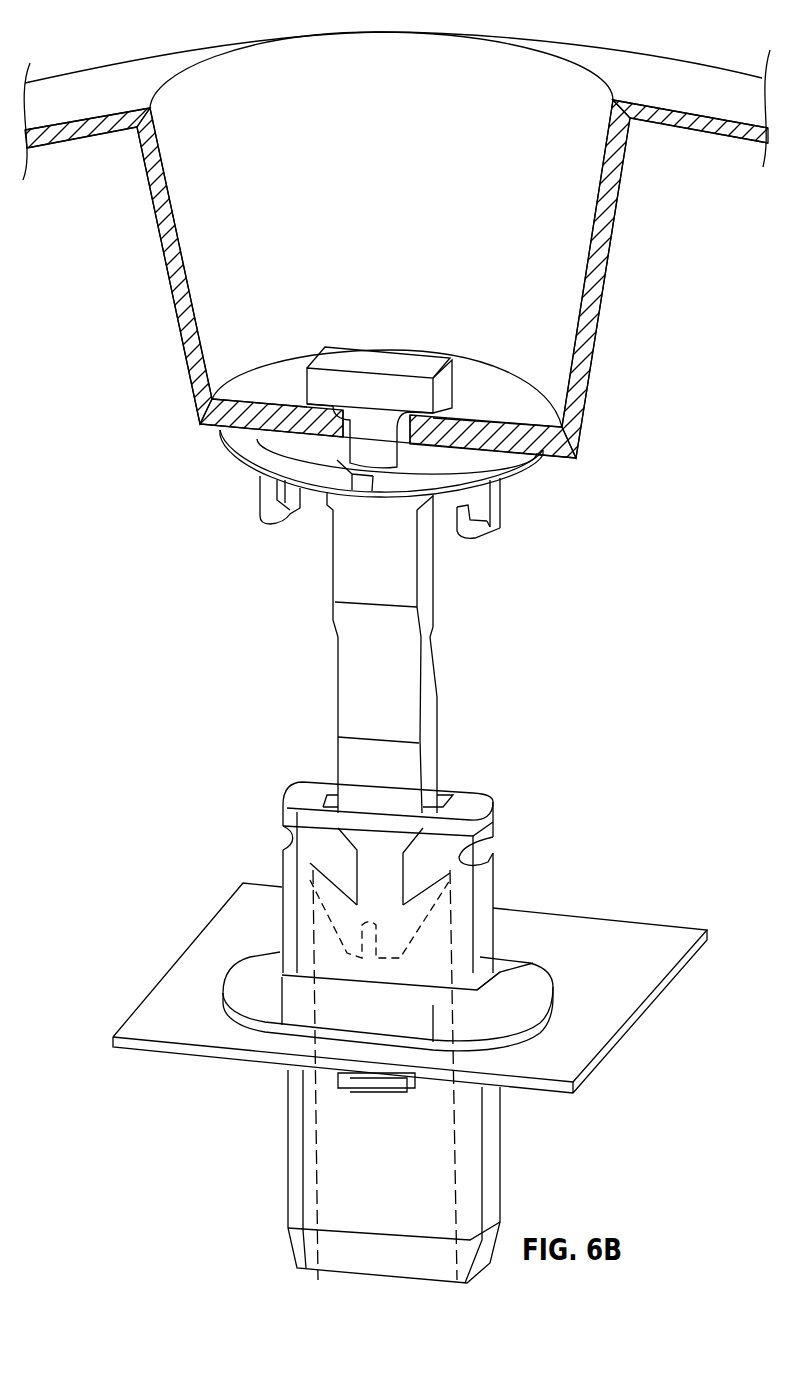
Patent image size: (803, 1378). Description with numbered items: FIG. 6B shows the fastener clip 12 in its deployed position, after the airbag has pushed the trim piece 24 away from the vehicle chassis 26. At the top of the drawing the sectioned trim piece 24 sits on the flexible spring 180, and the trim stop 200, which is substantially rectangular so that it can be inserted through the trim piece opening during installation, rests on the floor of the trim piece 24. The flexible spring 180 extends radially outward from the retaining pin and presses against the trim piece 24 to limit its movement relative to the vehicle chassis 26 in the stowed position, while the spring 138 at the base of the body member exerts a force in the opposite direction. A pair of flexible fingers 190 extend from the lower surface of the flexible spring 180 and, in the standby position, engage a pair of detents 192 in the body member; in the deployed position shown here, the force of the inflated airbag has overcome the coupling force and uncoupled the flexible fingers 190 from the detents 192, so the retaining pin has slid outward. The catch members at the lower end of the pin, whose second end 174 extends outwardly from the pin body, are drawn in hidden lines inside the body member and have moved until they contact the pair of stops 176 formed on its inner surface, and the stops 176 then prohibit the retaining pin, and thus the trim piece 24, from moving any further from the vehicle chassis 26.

The trim piece 24 is at (610, 232).
The trim stop 200 is at (397, 362).
The flexible spring 180 is at (517, 477).
The flexible fingers 190 is at (267, 508).
The fastener clip 12 is at (672, 852).
The detents 192 is at (278, 838).
The stops 176 is at (320, 804).
The second end 174 is at (310, 865).
The spring 138 is at (525, 977).
The vehicle chassis 26 is at (628, 1025).